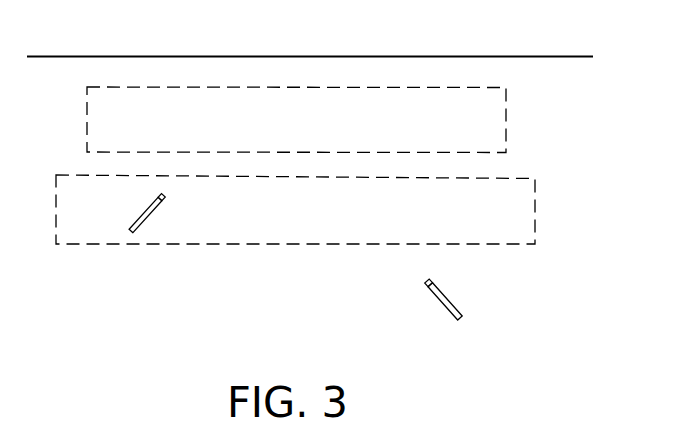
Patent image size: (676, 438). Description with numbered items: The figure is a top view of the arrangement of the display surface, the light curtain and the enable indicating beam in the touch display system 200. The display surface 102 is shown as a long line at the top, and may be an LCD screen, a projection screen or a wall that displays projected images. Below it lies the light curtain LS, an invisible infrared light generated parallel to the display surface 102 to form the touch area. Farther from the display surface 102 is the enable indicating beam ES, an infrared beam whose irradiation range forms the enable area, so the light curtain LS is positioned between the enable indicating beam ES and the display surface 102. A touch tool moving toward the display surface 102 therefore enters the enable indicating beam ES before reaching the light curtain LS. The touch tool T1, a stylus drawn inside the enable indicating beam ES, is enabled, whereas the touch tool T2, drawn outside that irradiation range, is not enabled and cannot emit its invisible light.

The display surface 102 is at (584, 56).
The light curtain LS is at (506, 119).
The enable indicating beam ES is at (535, 212).
The touch tool T1 is at (146, 222).
The touch tool T2 is at (450, 302).
The touch display system 200 is at (637, 367).